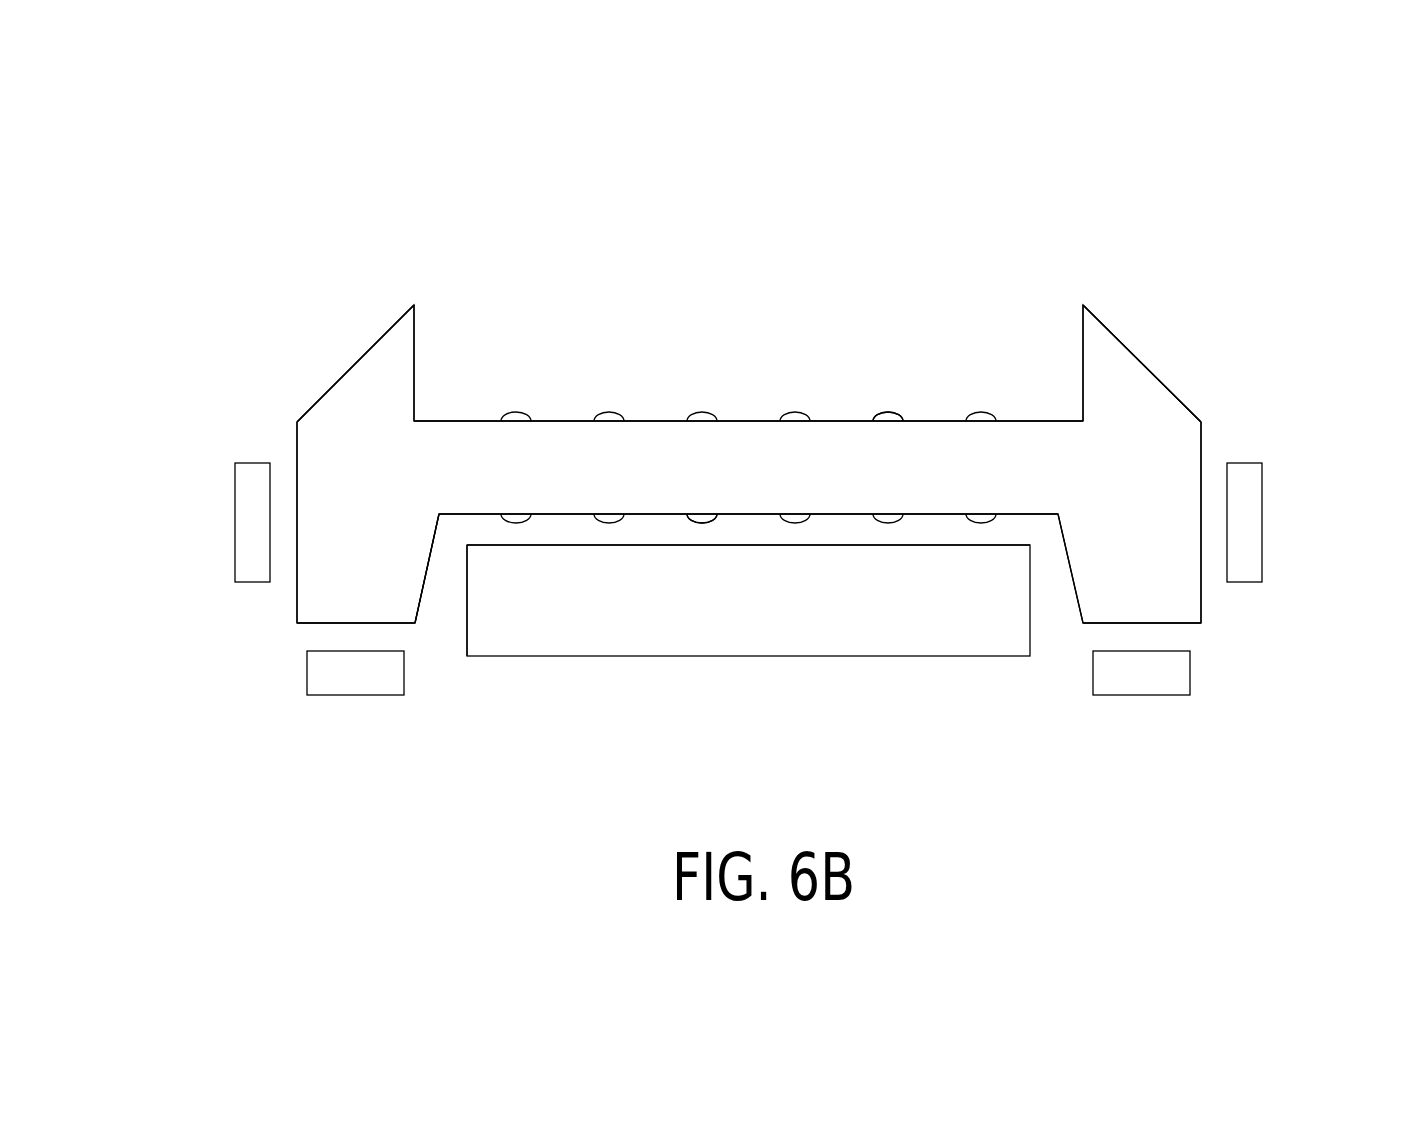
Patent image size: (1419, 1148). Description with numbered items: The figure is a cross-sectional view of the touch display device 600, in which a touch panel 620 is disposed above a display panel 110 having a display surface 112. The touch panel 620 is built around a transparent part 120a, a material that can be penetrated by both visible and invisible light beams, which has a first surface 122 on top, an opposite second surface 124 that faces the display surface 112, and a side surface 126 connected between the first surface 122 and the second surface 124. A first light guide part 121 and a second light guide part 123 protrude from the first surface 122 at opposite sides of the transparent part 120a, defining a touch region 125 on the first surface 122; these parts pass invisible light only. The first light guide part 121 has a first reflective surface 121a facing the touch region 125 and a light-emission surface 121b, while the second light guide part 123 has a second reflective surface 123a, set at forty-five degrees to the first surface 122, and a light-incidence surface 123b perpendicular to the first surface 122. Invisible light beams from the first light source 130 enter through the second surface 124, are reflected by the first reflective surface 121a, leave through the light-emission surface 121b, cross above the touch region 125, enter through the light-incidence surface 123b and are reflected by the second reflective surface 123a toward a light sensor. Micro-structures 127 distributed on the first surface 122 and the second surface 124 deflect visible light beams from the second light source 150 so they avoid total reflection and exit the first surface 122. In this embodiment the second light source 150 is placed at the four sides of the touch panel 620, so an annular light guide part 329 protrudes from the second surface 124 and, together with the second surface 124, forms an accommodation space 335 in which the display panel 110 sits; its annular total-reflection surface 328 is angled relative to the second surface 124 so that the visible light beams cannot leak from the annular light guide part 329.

The touch panel 620 is at (352, 229).
The touch region 125 is at (743, 289).
The first light guide part 121 is at (392, 341).
The first reflective surface 121a is at (363, 367).
The light-emission surface 121b is at (426, 333).
The second light guide part 123 is at (1112, 349).
The second reflective surface 123a is at (1135, 367).
The light-incidence surface 123b is at (1080, 332).
The transparent part 120a is at (976, 437).
The first surface 122 is at (562, 417).
The second surface 124 is at (853, 516).
The micro-structures 127 is at (890, 418).
The side surface 126 is at (296, 440).
The annular light guide part 329 is at (297, 610).
The annular total-reflection surface 328 is at (424, 578).
The accommodation space 335 is at (435, 608).
The display panel 110 is at (617, 656).
The display surface 112 is at (655, 544).
The second light source 150 is at (235, 520).
The first light source 130 is at (307, 672).
The touch display device 600 is at (1388, 742).